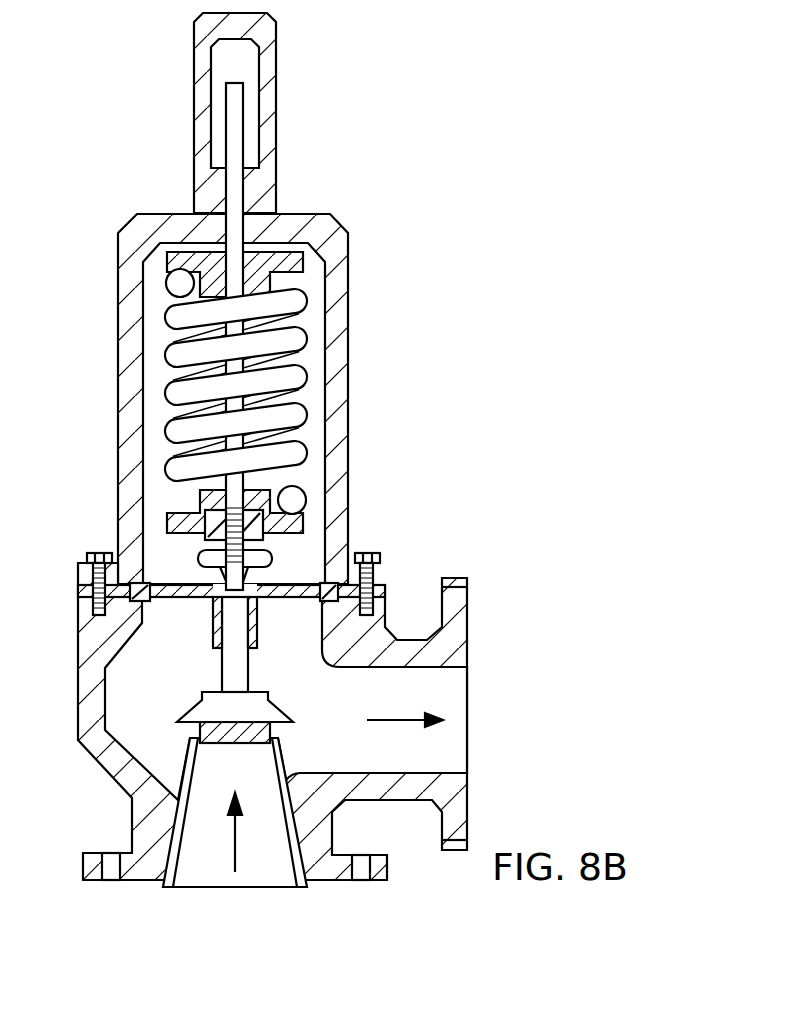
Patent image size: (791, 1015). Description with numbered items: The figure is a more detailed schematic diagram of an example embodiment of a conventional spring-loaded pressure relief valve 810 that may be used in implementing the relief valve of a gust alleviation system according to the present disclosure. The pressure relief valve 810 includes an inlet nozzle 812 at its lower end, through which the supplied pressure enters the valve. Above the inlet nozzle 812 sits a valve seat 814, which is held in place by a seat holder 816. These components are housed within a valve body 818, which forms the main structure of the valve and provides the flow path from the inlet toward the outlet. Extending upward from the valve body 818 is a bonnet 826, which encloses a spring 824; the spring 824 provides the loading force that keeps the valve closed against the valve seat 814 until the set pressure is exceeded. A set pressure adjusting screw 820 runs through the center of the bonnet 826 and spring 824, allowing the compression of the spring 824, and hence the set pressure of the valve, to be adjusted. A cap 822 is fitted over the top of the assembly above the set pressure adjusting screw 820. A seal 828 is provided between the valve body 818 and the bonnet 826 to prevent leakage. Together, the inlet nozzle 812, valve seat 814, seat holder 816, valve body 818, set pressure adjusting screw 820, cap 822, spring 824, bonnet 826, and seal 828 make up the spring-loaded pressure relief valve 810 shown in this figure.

The pressure relief valve 810 is at (295, 450).
The inlet nozzle 812 is at (173, 848).
The valve seat 814 is at (260, 728).
The seat holder 816 is at (195, 713).
The valve body 818 is at (88, 640).
The set pressure adjusting screw 820 is at (224, 118).
The cap 822 is at (266, 130).
The spring 824 is at (236, 420).
The bonnet 826 is at (338, 392).
The seal 828 is at (272, 598).